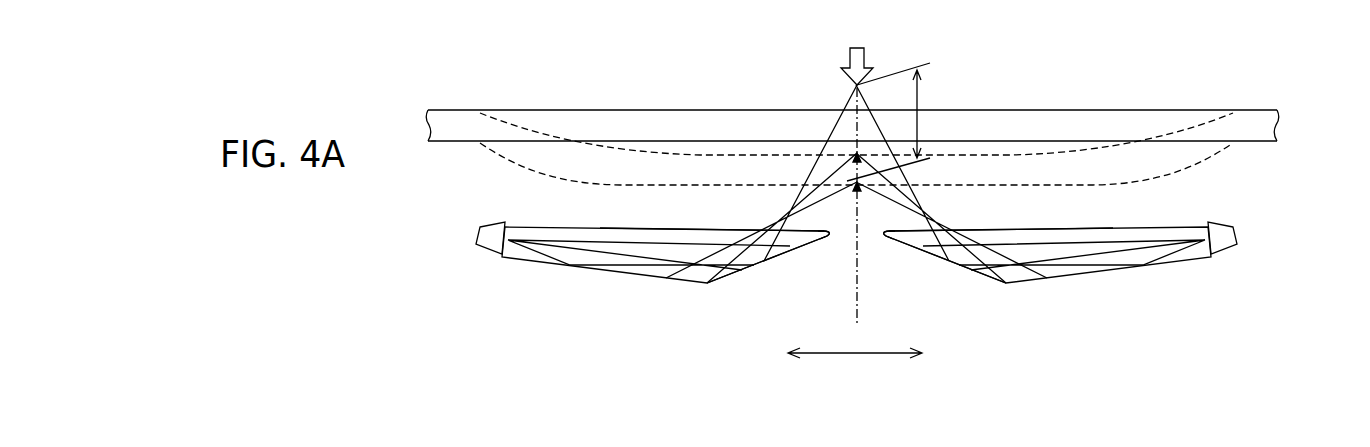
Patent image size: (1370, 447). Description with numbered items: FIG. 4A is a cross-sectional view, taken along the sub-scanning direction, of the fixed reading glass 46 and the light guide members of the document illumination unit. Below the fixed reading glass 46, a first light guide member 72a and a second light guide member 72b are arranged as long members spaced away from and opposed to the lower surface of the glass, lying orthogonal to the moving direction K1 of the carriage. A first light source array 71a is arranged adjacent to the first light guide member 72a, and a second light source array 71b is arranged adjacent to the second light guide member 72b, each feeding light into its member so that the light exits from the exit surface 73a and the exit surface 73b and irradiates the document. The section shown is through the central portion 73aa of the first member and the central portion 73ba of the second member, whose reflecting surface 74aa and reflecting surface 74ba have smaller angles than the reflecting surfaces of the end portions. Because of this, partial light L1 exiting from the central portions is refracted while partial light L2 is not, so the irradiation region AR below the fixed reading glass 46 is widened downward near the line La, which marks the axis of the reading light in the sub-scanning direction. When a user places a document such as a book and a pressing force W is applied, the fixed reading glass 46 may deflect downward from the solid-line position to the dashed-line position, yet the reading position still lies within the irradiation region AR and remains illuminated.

The fixed reading glass 46 is at (657, 165).
The first light source array 71a is at (478, 231).
The first light guide member 72a is at (537, 227).
The exit surface 73a is at (758, 231).
The central portion 73aa is at (826, 237).
The reflecting surface 74aa is at (765, 266).
The second light source array 71b is at (1235, 231).
The second light guide member 72b is at (1176, 227).
The exit surface 73b is at (955, 231).
The central portion 73ba is at (887, 237).
The reflecting surface 74ba is at (948, 266).
The partial light L1 is at (790, 231).
The partial light L2 is at (837, 127).
The pressing force W is at (857, 53).
The irradiation region AR is at (931, 114).
The line La is at (857, 310).
The moving direction K1 is at (855, 365).